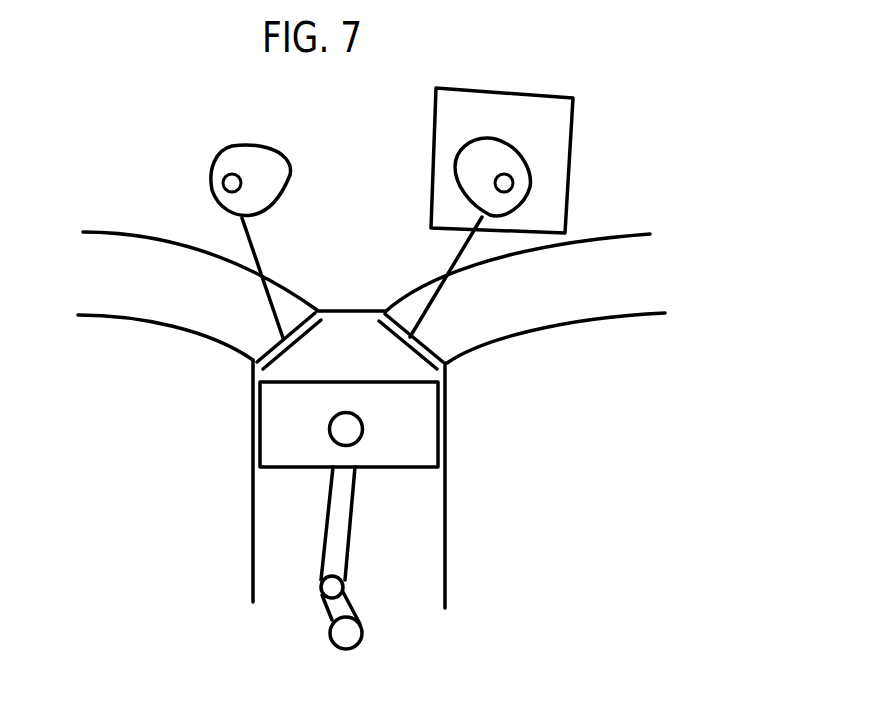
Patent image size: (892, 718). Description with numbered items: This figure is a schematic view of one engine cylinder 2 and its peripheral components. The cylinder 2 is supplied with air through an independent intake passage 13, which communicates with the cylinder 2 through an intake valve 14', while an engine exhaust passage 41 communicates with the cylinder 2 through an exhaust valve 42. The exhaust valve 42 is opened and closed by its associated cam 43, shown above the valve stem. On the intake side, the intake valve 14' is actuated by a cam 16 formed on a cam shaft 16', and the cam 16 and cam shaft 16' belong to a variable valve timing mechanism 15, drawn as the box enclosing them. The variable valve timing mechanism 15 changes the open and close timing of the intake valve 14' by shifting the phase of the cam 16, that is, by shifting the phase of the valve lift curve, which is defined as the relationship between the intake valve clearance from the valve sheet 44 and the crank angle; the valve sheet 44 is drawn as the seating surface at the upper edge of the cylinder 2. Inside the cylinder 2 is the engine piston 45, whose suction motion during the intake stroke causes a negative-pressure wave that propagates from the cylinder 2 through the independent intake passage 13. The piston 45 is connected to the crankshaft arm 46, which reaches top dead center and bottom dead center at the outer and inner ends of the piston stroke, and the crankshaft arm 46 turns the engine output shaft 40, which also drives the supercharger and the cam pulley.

The cylinder 2 is at (447, 445).
The independent intake passage 13 is at (587, 318).
The exhaust valve 14' is at (427, 271).
The variable valve timing mechanism 15 is at (510, 88).
The cam 16 is at (542, 155).
The cam shaft 16' is at (566, 181).
The output shaft 40 is at (348, 633).
The engine exhaust passage 41 is at (145, 318).
The exhaust valve 42 is at (253, 240).
The cam 43 is at (248, 145).
The valve sheet 44 is at (433, 347).
The engine piston 45 is at (393, 452).
The crankshaft arm 46 is at (327, 520).